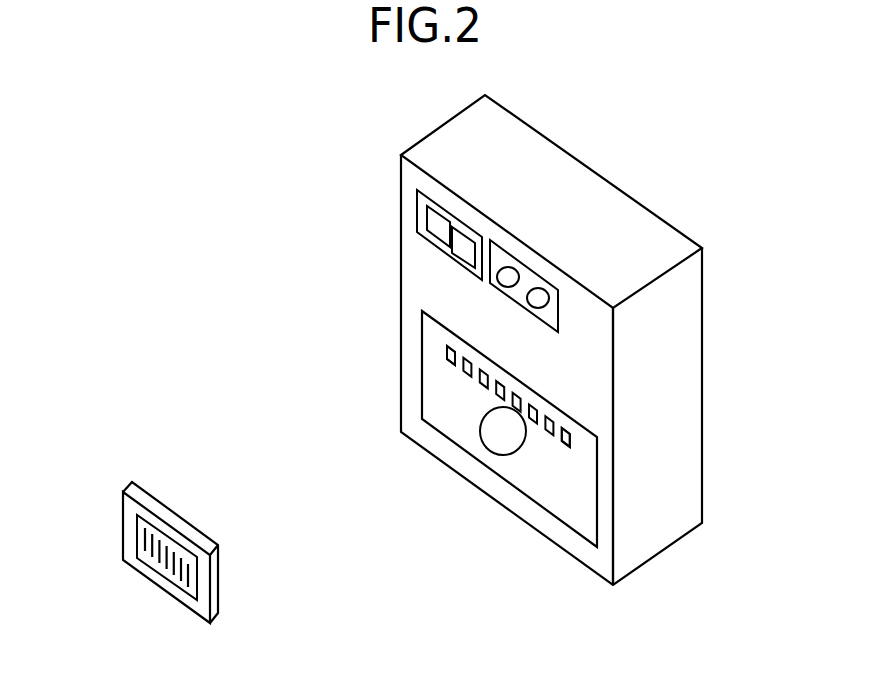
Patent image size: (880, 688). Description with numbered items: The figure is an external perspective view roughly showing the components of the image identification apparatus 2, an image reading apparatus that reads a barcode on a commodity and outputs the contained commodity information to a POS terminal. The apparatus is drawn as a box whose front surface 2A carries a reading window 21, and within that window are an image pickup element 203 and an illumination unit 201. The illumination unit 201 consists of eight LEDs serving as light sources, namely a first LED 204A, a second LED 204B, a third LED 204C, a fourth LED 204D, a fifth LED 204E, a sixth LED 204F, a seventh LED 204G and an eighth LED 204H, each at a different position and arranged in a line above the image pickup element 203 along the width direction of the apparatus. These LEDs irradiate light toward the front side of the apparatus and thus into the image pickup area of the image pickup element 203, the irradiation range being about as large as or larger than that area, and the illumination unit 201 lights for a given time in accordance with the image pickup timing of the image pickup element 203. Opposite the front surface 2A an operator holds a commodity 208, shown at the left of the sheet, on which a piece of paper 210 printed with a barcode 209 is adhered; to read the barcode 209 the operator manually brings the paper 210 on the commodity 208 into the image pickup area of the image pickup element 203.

The image identification apparatus 2 is at (705, 302).
The front surface 2A is at (598, 338).
The reading window 21 is at (433, 430).
The illumination unit 201 is at (575, 438).
The image pickup element 203 is at (490, 437).
The first LED 204A is at (445, 352).
The second LED 204B is at (463, 368).
The third LED 204C is at (484, 382).
The fourth LED 204D is at (499, 380).
The fifth LED 204E is at (516, 392).
The sixth LED 204F is at (534, 404).
The seventh LED 204G is at (550, 435).
The eighth LED 204H is at (566, 447).
The commodity 208 is at (215, 583).
The barcode 209 is at (187, 585).
The paper 210 is at (145, 518).